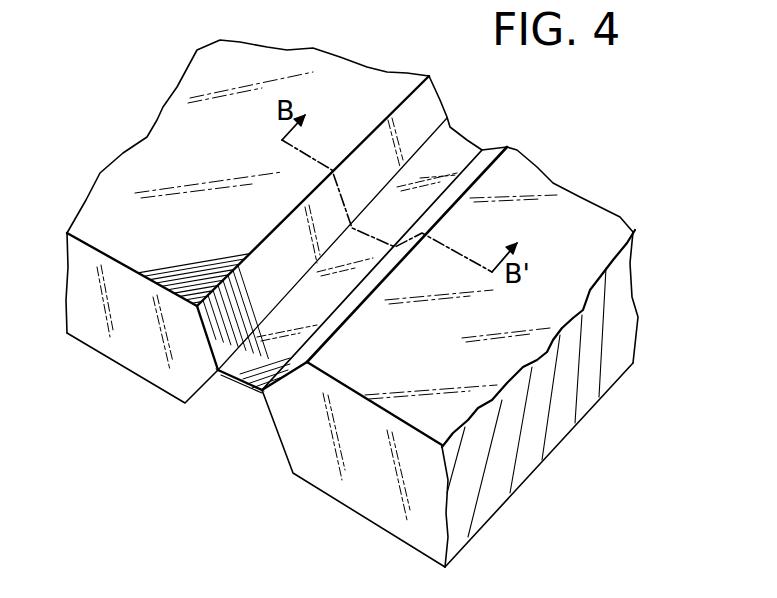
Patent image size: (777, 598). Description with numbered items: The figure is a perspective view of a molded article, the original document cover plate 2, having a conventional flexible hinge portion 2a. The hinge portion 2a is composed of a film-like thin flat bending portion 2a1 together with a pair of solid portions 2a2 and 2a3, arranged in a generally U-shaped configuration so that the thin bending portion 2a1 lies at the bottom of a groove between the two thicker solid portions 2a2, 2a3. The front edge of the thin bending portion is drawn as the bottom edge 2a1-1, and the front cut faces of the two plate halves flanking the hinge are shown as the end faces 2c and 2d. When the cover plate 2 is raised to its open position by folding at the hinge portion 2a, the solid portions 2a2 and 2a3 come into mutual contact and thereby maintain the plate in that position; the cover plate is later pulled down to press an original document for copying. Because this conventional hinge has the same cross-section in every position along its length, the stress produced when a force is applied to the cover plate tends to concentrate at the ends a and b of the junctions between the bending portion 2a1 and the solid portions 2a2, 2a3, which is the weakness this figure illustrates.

The original document cover plate 2 is at (168, 123).
The hinge portion 2a is at (470, 132).
The bending portion 2a1 is at (252, 385).
The bottom edge of groove 2a1-1 is at (229, 378).
The solid portion 2a2 is at (432, 122).
The solid portion 2a3 is at (482, 168).
The left front end face 2c is at (123, 352).
The right front end face 2d is at (338, 468).
The end of junction a is at (218, 374).
The end of junction b is at (256, 393).